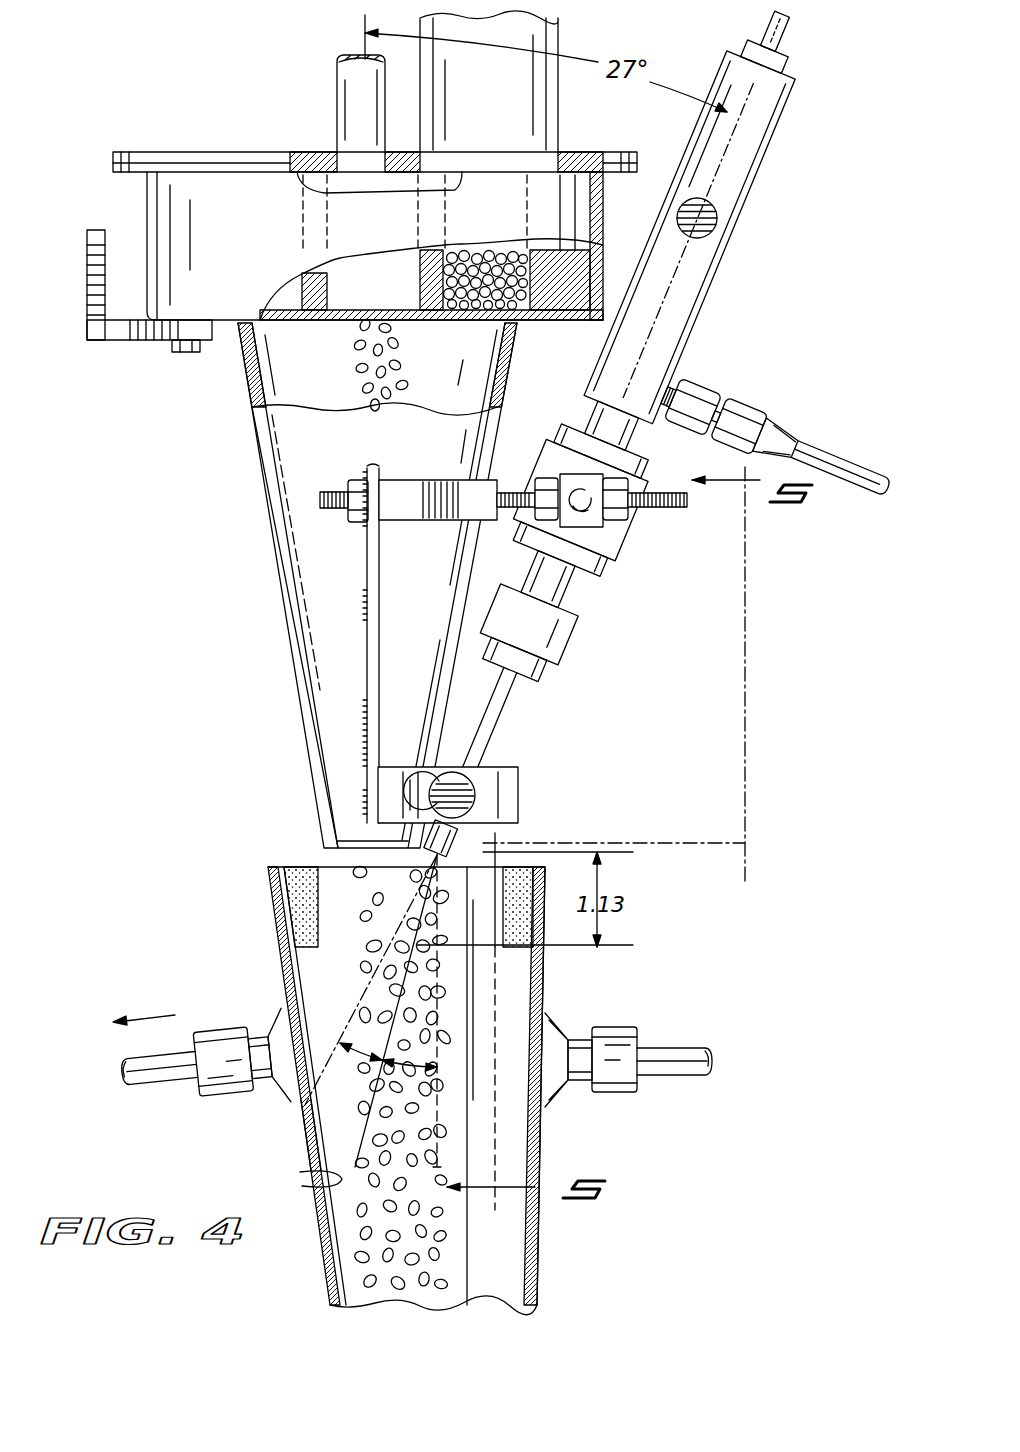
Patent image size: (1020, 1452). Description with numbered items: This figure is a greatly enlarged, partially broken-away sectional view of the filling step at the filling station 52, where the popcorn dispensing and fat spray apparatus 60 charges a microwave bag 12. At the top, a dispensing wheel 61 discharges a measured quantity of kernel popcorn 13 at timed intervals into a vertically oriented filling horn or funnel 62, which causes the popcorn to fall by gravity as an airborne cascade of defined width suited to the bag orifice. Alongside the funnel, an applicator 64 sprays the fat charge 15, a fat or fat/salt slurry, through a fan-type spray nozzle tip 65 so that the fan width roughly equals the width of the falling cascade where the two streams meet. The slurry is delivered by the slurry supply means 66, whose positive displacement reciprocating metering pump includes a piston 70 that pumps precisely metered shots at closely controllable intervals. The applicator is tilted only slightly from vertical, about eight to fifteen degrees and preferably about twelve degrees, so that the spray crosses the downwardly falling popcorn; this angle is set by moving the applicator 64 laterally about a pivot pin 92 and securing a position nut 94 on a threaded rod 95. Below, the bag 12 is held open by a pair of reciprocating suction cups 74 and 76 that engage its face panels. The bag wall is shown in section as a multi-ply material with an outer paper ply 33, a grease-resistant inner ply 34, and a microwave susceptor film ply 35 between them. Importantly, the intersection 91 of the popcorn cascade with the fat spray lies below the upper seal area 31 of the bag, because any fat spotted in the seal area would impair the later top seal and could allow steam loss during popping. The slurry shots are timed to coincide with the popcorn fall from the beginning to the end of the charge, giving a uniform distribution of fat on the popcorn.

The microwave bag 12 is at (552, 1152).
The kernel popcorn 13 is at (366, 334).
The edible fat charge 15 is at (357, 1002).
The seal area 31 is at (295, 900).
The outer ply 33 is at (283, 970).
The inner ply 34 is at (300, 1178).
The microwave susceptor film ply 35 is at (302, 1143).
The filling station 52 is at (535, 1240).
The popcorn dispensing and fat spray apparatus 60 is at (232, 394).
The dispensing wheel 61 is at (568, 277).
The filling horn or funnel 62 is at (262, 470).
The applicator 64 is at (500, 719).
The spray nozzle tip 65 is at (454, 828).
The slurry supply means 66 is at (823, 452).
The piston 70 is at (697, 310).
The suction cup 74 is at (160, 1080).
The suction cup 76 is at (682, 1050).
The intersection 91 is at (417, 945).
The pivot pin 92 is at (467, 795).
The position nut 94 is at (585, 523).
The threaded rod 95 is at (675, 506).